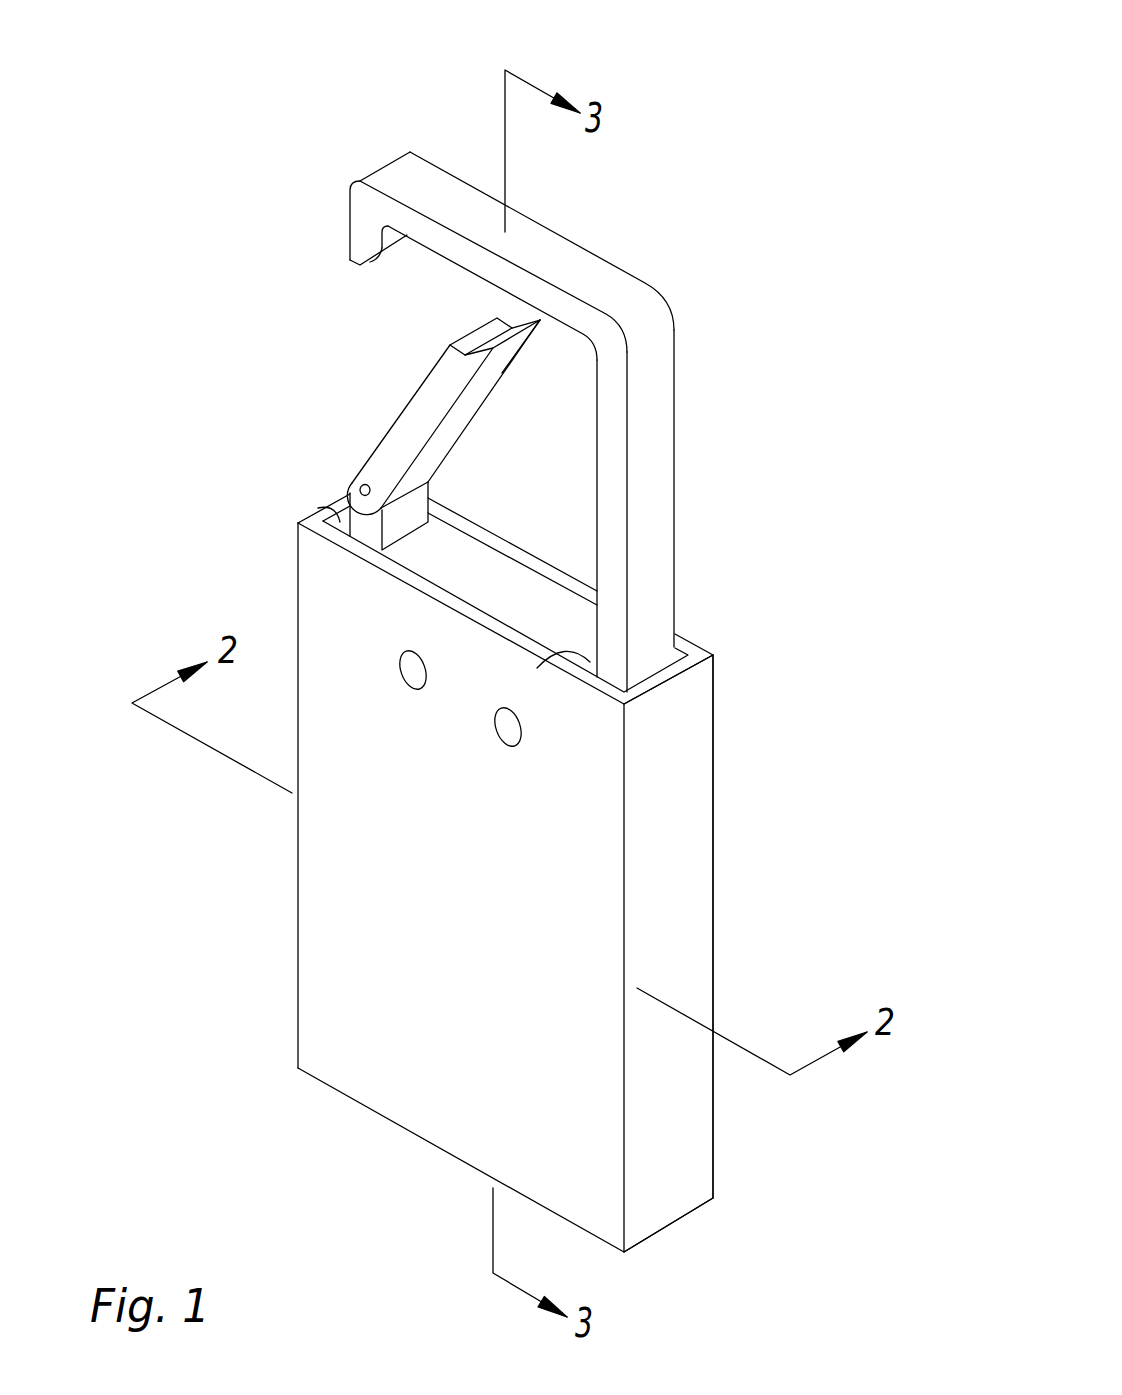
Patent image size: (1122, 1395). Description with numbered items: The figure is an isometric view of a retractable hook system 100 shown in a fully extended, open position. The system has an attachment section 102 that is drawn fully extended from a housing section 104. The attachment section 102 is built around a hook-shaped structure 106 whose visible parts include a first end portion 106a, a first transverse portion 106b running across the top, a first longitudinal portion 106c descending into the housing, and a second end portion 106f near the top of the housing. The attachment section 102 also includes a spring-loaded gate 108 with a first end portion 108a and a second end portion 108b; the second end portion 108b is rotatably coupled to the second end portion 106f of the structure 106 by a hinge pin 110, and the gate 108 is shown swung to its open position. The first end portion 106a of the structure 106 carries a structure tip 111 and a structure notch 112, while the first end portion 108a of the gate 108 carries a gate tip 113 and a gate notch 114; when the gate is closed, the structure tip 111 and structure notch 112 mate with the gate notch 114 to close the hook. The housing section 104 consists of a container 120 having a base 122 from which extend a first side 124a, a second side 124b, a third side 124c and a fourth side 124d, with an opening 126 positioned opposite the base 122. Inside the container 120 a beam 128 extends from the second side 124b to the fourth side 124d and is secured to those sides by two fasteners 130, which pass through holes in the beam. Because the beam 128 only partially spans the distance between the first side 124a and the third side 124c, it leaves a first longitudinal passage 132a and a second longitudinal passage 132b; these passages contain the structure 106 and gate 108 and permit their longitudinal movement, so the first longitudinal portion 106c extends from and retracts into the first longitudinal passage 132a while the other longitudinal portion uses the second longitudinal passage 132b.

The retractable hook system 100 is at (805, 38).
The attachment section 102 is at (285, 331).
The housing section 104 is at (800, 831).
The structure 106 is at (603, 274).
The first end portion 106a is at (350, 222).
The first transverse portion 106b is at (567, 257).
The first longitudinal portion 106c is at (658, 508).
The second end portion 106f is at (410, 506).
The spring-loaded gate 108 is at (428, 372).
The first end portion 108a is at (495, 370).
The second end portion 108b is at (365, 467).
The hinge pin 110 is at (352, 491).
The structure tip 111 is at (352, 270).
The structure notch 112 is at (378, 254).
The gate tip 113 is at (513, 337).
The gate notch 114 is at (480, 337).
The container 120 is at (693, 783).
The base 122 is at (445, 1152).
The first side 124a is at (678, 900).
The second side 124b is at (372, 943).
The third side 124c is at (292, 838).
The fourth side 124d is at (715, 725).
The opening 126 is at (555, 452).
The beam 128 is at (537, 588).
The fasteners 130 is at (413, 672).
The first longitudinal passage 132a is at (537, 668).
The second longitudinal passage 132b is at (318, 508).